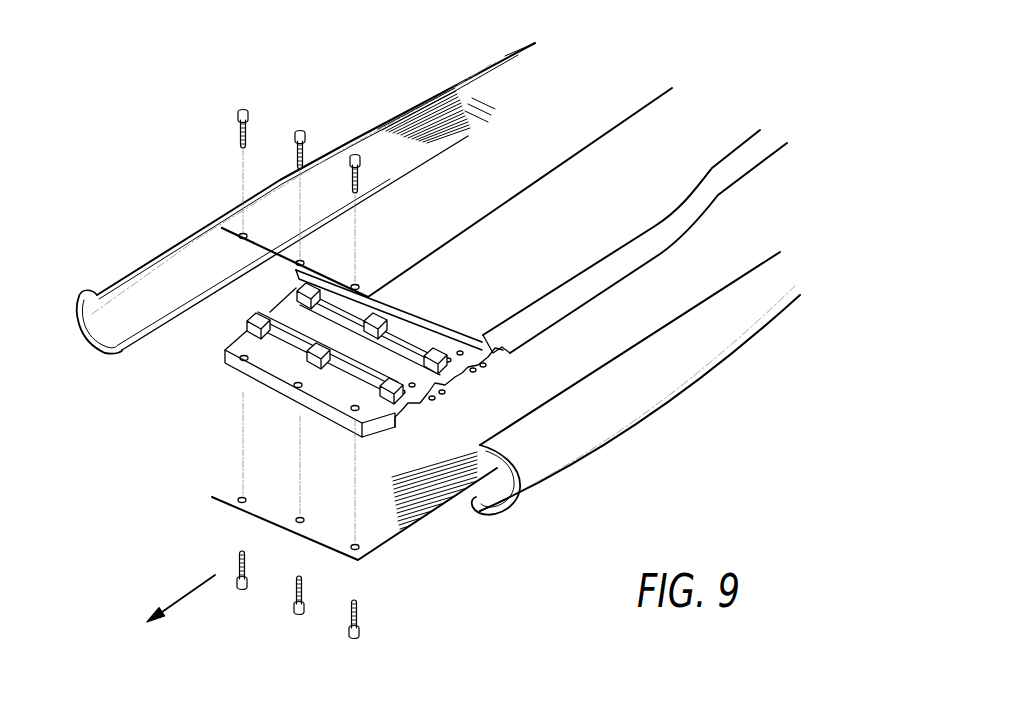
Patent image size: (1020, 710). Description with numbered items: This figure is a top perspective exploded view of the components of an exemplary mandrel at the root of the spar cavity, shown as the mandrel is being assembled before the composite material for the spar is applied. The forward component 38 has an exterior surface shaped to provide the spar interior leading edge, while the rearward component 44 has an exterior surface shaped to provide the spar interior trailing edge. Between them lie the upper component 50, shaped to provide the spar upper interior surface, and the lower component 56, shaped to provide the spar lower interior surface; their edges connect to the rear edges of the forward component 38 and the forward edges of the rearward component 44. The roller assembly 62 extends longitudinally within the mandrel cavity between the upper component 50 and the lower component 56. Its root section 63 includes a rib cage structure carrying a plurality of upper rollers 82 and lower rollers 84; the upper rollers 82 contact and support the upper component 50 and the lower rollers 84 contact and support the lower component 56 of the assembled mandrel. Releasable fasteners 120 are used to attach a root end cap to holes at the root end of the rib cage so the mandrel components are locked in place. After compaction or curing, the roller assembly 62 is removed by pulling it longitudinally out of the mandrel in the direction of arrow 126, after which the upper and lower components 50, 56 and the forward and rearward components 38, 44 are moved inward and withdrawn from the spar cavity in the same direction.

The forward component 38 is at (133, 262).
The rearward component 44 is at (592, 432).
The upper component 50 is at (503, 83).
The lower component 56 is at (395, 535).
The roller assembly 62 is at (708, 147).
The root section 63 is at (319, 367).
The upper rollers 82 is at (285, 342).
The lower rollers 84 is at (338, 387).
The releasable fasteners 120 is at (238, 133).
The arrow 126 is at (188, 597).